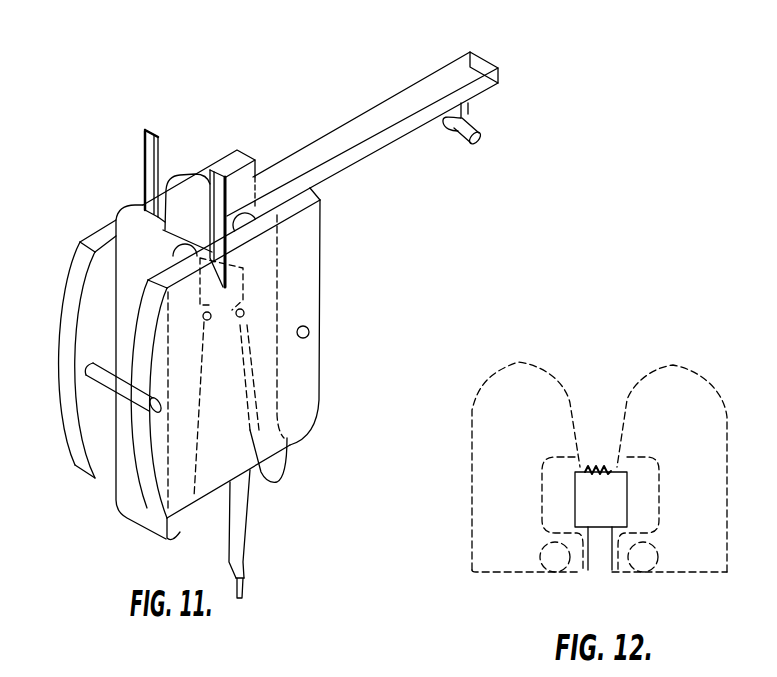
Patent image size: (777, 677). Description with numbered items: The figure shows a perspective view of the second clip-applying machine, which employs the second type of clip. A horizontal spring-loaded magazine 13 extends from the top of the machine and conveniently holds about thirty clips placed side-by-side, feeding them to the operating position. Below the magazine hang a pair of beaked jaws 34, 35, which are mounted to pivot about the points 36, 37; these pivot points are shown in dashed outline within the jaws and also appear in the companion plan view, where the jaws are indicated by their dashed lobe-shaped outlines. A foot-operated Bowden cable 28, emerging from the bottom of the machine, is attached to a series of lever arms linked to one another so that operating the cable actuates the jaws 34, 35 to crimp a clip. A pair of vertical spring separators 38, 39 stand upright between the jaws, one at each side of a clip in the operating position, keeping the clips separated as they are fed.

In FIG. 11, the horizontal spring-loaded magazine 13 is at (381, 108).
In FIG. 11, the foot-operated Bowden cable 28 is at (239, 538).
In FIG. 11, the beaked jaw 34 is at (117, 297).
In FIG. 12, the beaked jaw 34 is at (493, 387).
In FIG. 11, the beaked jaw 35 is at (259, 255).
In FIG. 12, the beaked jaw 35 is at (697, 392).
In FIG. 11, the pivot point 36 is at (206, 322).
In FIG. 12, the pivot point 36 is at (550, 563).
In FIG. 11, the pivot point 37 is at (243, 315).
In FIG. 12, the pivot point 37 is at (643, 563).
In FIG. 11, the vertical spring separator 38 is at (147, 157).
In FIG. 11, the vertical spring separator 39 is at (211, 209).